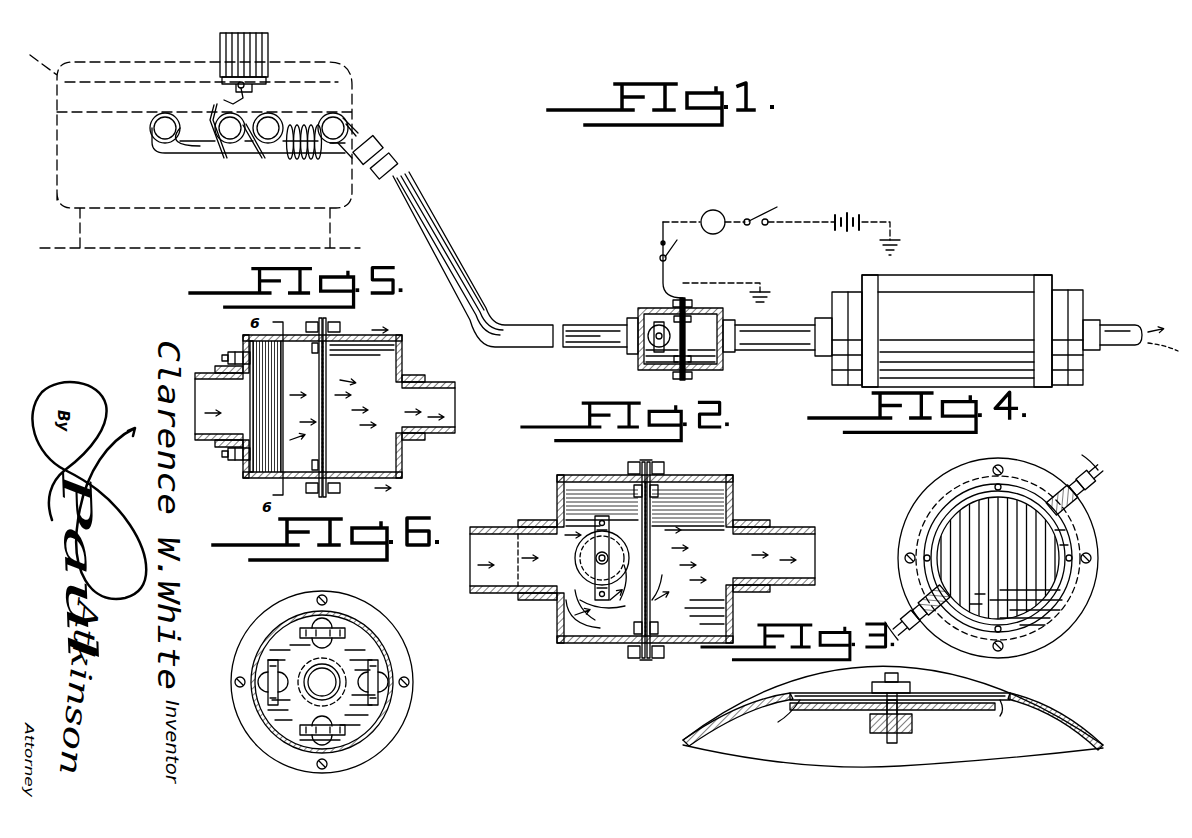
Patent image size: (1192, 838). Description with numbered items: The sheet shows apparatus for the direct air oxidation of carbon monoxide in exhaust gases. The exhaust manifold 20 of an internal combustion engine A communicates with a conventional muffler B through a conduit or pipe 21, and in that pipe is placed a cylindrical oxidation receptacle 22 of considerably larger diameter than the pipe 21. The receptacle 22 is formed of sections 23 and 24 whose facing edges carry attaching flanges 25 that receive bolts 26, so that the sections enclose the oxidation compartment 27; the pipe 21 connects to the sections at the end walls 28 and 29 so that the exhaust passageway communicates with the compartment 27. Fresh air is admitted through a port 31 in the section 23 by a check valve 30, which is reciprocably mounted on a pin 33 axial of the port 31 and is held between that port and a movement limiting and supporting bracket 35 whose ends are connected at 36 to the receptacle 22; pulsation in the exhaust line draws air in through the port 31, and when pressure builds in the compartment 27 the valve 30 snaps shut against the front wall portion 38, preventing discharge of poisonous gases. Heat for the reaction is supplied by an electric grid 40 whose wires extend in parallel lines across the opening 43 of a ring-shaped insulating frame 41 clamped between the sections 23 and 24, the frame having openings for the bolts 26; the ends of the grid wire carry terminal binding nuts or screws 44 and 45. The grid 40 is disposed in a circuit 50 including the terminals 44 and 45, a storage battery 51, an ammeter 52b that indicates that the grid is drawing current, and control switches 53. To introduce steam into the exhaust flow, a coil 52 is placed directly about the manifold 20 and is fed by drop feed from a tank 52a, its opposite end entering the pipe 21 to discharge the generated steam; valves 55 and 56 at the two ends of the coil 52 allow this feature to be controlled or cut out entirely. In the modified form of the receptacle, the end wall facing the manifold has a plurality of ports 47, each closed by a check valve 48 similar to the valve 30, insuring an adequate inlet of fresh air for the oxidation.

In FIG. 1, the internal combustion engine A is at (355, 80).
In FIG. 1, the muffler B is at (930, 312).
In FIG. 1, the exhaust manifold 20 is at (186, 150).
In FIG. 1, the conduit or pipe 21 is at (447, 222).
In FIG. 2, the conduit or pipe 21 is at (494, 527).
In FIG. 1, the oxidation receptacle 22 is at (639, 311).
In FIG. 2, the oxidation receptacle 22 is at (559, 477).
In FIG. 3, the oxidation receptacle 22 is at (1049, 709).
In FIG. 5, the oxidation receptacle 22 is at (356, 484).
In FIG. 6, the oxidation receptacle 22 is at (372, 632).
In FIG. 2, the section 23 is at (566, 500).
In FIG. 2, the section 24 is at (718, 478).
In FIG. 2, the attaching flanges 25 is at (658, 660).
In FIG. 2, the bolts 26 is at (665, 653).
In FIG. 4, the bolts 26 is at (1092, 558).
In FIG. 2, the oxidation compartment 27 is at (590, 636).
In FIG. 2, the end wall 28 is at (564, 622).
In FIG. 2, the end wall 29 is at (498, 598).
In FIG. 1, the check valve 30 is at (648, 348).
In FIG. 2, the check valve 30 is at (614, 553).
In FIG. 3, the check valve 30 is at (832, 708).
In FIG. 3, the port 31 is at (850, 692).
In FIG. 3, the pin 33 is at (906, 680).
In FIG. 2, the movement limiting and supporting bracket 35 is at (598, 577).
In FIG. 2, the bracket end connections 36 is at (607, 526).
In FIG. 3, the front wall portion 38 is at (792, 700).
In FIG. 2, the grid 40 is at (652, 592).
In FIG. 4, the grid 40 is at (1030, 555).
In FIG. 5, the grid 40 is at (318, 402).
In FIG. 4, the ring-shaped insulating frame 41 is at (1090, 582).
In FIG. 4, the gasket 43 is at (1052, 592).
In FIG. 4, the terminal binding nut or screw 44 is at (896, 596).
In FIG. 1, the terminal binding nut or screw 45 is at (692, 323).
In FIG. 4, the terminal binding nut or screw 45 is at (1092, 478).
In FIG. 5, the ports 47 is at (240, 456).
In FIG. 5, the check valve 48 is at (256, 470).
In FIG. 6, the check valve 48 is at (382, 712).
In FIG. 1, the circuit 50 is at (684, 222).
In FIG. 1, the storage battery 51 is at (862, 215).
In FIG. 1, the coil 52 is at (296, 160).
In FIG. 1, the tank 52a is at (222, 46).
In FIG. 1, the ammeter 52b is at (723, 213).
In FIG. 1, the control switch 53 is at (680, 245).
In FIG. 1, the valve 55 is at (228, 90).
In FIG. 1, the valve 56 is at (372, 140).